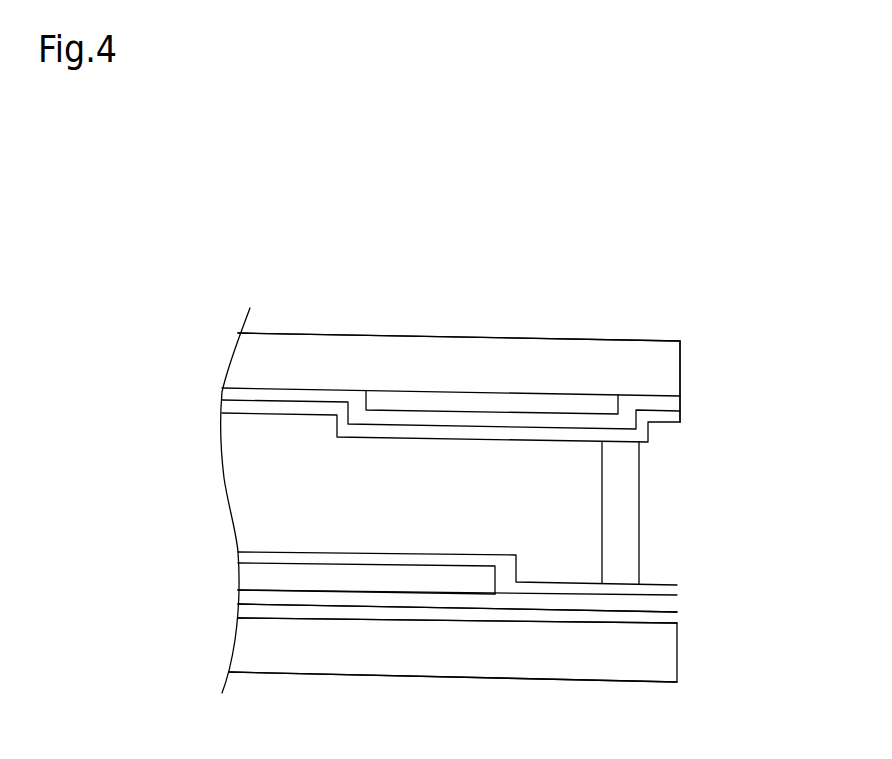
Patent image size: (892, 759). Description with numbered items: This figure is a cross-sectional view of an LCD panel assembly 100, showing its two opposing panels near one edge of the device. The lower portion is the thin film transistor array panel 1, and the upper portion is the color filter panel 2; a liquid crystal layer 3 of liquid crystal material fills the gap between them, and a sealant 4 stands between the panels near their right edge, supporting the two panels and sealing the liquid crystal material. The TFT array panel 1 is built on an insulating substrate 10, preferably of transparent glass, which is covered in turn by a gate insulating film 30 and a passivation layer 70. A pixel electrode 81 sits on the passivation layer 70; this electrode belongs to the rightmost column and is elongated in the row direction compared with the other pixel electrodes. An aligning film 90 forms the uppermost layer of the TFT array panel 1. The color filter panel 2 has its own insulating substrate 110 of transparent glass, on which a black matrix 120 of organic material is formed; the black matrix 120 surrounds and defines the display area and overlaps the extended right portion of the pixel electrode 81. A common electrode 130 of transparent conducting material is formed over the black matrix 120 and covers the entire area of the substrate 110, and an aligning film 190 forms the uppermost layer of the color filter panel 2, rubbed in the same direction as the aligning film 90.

The thin film transistor array panel 1 is at (418, 676).
The color filter panel 2 is at (398, 332).
The liquid crystal layer 3 is at (240, 500).
The sealant 4 is at (637, 495).
The insulating substrate 10 is at (611, 668).
The gate insulating film 30 is at (672, 622).
The passivation layer 70 is at (673, 604).
The pixel electrode 81 is at (252, 575).
The aligning film 90 is at (670, 590).
The panel assembly 100 is at (683, 372).
The insulating substrate 110 is at (632, 345).
The black matrix 120 is at (487, 404).
The common electrode 130 is at (303, 397).
The aligning film 190 is at (645, 434).